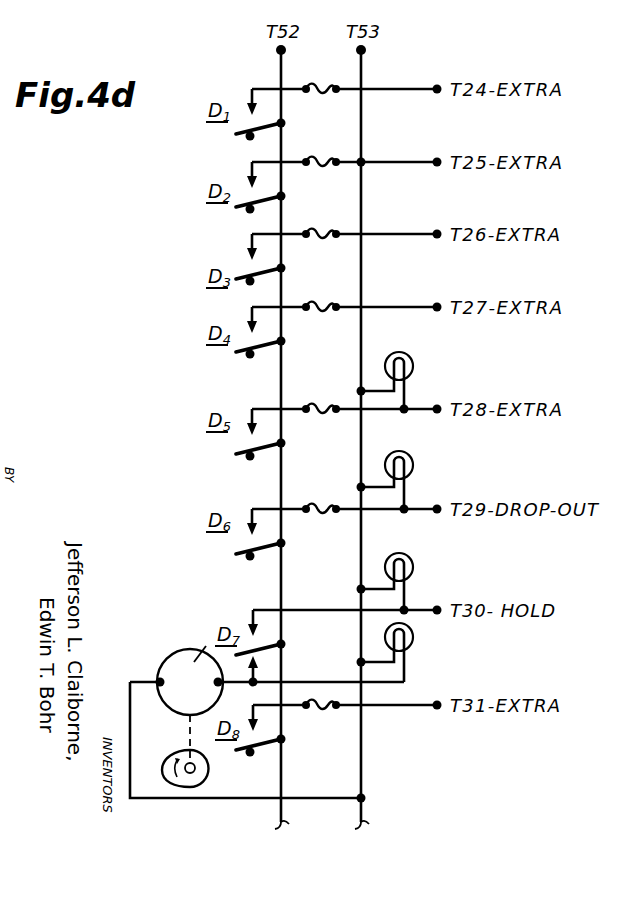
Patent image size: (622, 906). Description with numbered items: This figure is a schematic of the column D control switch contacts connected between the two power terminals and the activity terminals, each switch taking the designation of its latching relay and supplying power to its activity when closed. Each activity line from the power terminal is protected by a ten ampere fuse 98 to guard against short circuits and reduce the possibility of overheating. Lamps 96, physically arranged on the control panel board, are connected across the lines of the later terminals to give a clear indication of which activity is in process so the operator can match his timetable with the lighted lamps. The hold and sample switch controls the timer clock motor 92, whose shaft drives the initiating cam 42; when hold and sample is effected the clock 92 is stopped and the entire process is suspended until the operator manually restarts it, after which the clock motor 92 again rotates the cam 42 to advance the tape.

The fuse 98 is at (318, 96).
The lamp 96 is at (428, 551).
The clock timing motor 92 is at (174, 694).
The initiating cam 42 is at (205, 768).